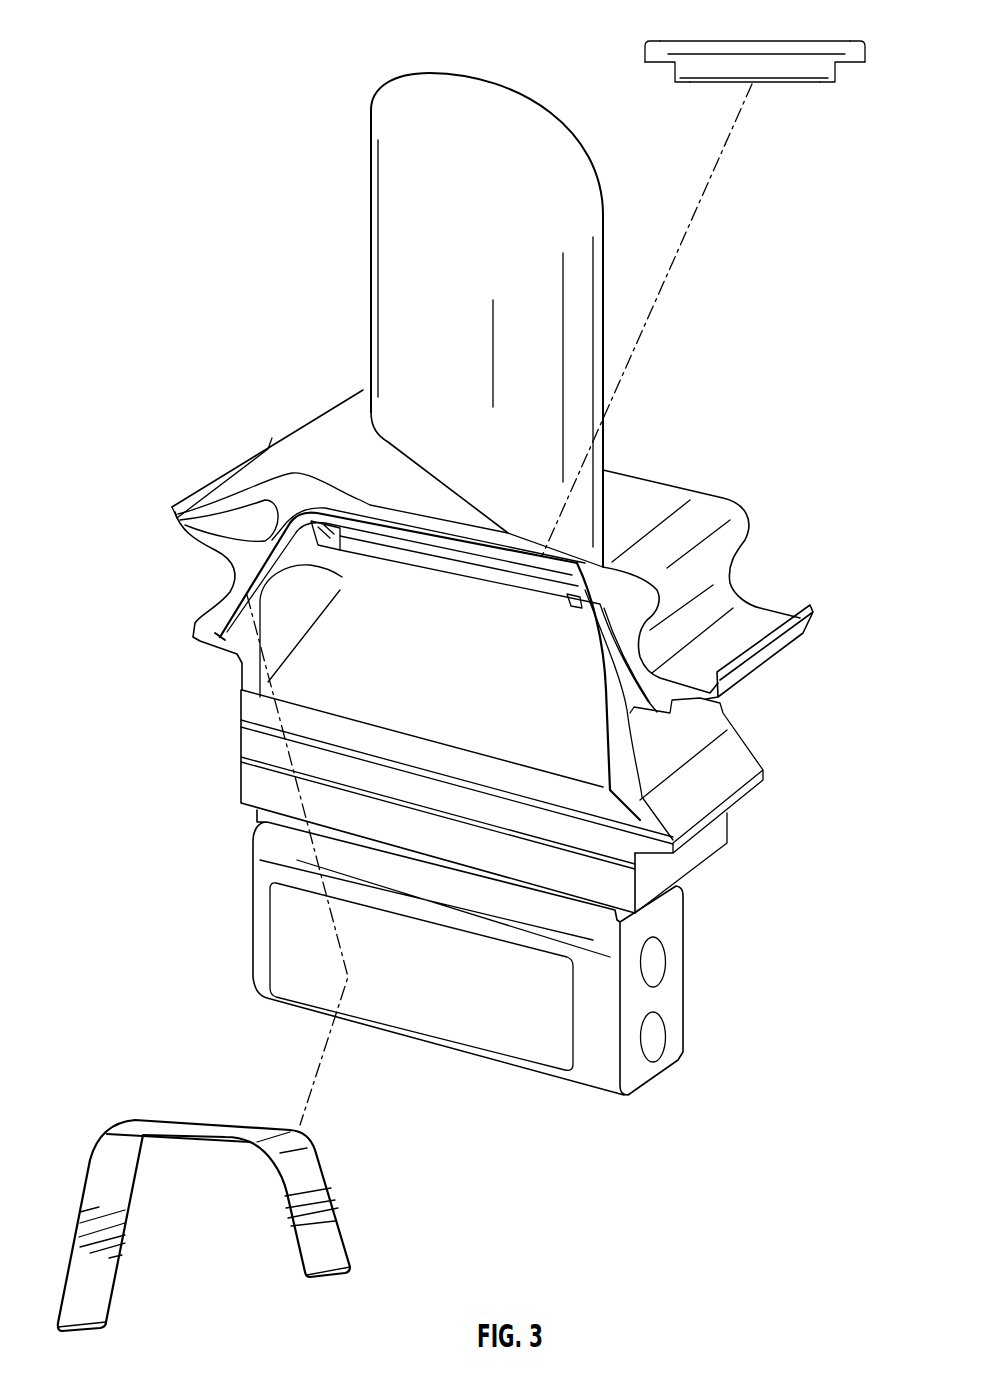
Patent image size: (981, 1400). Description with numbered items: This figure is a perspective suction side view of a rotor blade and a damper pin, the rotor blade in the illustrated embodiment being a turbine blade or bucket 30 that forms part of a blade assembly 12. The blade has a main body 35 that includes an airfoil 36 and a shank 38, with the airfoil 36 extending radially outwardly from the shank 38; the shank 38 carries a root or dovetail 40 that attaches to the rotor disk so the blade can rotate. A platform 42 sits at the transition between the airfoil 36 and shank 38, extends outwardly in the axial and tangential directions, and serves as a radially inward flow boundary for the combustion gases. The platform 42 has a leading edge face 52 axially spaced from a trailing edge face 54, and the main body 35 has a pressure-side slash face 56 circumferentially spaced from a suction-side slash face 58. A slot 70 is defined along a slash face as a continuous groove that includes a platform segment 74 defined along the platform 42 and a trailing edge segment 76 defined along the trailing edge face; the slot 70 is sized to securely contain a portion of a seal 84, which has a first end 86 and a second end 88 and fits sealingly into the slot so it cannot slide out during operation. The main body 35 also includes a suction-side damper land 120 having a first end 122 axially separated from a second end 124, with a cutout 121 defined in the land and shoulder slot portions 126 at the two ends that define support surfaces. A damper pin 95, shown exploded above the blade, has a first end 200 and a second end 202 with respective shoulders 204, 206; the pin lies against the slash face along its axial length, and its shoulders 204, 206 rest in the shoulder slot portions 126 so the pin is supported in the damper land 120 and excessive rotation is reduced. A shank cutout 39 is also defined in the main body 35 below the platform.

The turbine blade assembly 12 is at (723, 708).
The turbine blade or bucket 30 is at (238, 176).
The main body 35 is at (797, 507).
The airfoil 36 is at (556, 246).
The shank 38 is at (428, 700).
The shank cutout 39 is at (562, 725).
The root or dovetail 40 is at (440, 860).
The platform 42 is at (324, 432).
The leading edge face 52 is at (728, 588).
The trailing edge face 54 is at (263, 453).
The pressure-side slash face 56 is at (674, 492).
The suction-side slash face 58 is at (647, 607).
The slot 70 is at (296, 508).
The platform segment 74 is at (493, 552).
The trailing edge segment 76 is at (250, 583).
The seal 84 is at (289, 1243).
The first end 86 is at (325, 1263).
The second end 88 is at (82, 1328).
The damper pin 95 is at (760, 53).
The suction-side damper land 120 is at (408, 552).
The cutout 121 is at (462, 573).
The first end 122 is at (317, 545).
The second end 124 is at (568, 610).
The shoulder slot portions 126 is at (350, 535).
The first end 200 is at (650, 41).
The second end 202 is at (862, 41).
The shoulder 204 is at (652, 66).
The shoulder 206 is at (848, 66).